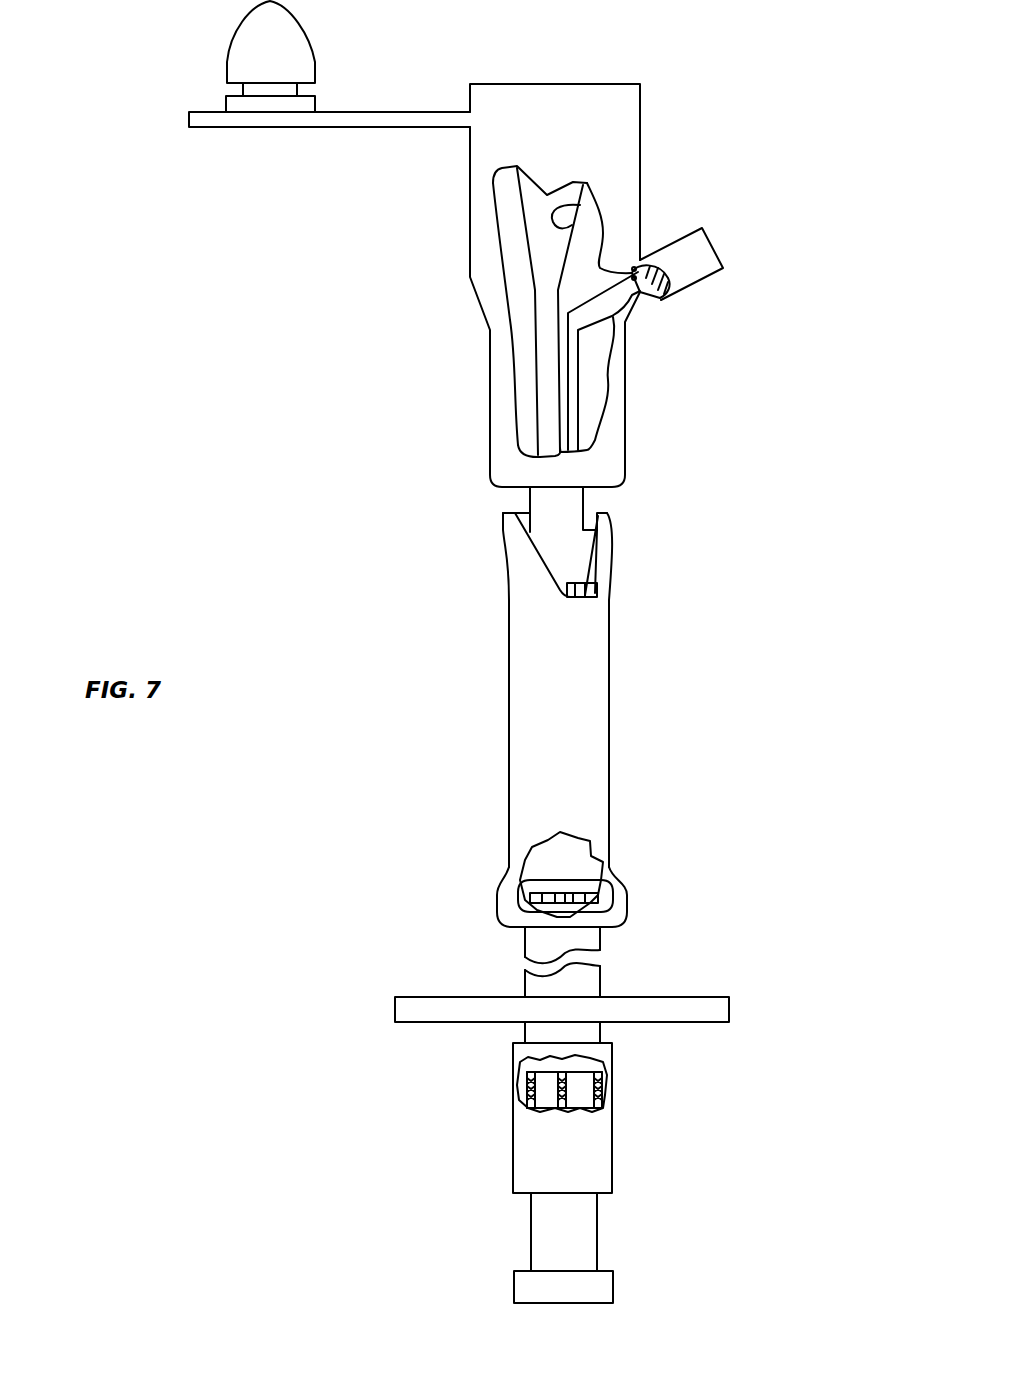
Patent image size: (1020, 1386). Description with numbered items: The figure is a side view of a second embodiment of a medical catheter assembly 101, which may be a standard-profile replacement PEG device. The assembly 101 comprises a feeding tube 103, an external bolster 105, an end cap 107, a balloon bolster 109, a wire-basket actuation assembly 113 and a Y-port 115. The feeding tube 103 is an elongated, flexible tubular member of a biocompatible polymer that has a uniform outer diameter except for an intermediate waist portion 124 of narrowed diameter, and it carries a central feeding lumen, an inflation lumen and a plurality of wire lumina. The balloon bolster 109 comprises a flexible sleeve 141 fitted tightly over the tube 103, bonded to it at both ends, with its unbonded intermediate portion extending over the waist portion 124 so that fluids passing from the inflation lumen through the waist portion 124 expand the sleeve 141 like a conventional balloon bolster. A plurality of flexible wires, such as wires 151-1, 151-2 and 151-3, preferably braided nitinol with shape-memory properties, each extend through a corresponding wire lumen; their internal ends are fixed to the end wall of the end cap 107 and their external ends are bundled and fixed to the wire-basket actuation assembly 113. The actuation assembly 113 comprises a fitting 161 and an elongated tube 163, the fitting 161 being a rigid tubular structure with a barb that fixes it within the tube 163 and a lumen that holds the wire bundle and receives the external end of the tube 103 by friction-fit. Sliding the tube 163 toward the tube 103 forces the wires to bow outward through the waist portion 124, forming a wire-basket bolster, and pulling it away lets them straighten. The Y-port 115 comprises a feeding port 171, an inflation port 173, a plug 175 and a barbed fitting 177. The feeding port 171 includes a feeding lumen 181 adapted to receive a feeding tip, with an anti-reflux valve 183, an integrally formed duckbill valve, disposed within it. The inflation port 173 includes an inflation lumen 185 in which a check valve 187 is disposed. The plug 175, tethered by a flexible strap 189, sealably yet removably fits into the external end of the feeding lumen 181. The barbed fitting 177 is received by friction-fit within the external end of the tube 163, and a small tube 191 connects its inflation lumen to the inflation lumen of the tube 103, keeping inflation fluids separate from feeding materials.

The assembly 101 is at (247, 323).
The feeding tube 103 is at (609, 1233).
The external bolster 105 is at (700, 992).
The end cap 107 is at (505, 1295).
The balloon bolster 109 is at (499, 1145).
The wire-basket actuation assembly 113 is at (620, 790).
The Y-port 115 is at (435, 367).
The intermediate waist portion 124 is at (545, 1100).
The flexible sleeve 141 is at (613, 1173).
The flexible wire 151-1 is at (527, 1080).
The flexible wire 151-2 is at (567, 1087).
The flexible wire 151-3 is at (607, 1103).
The fitting 161 is at (548, 865).
The elongated tube 163 is at (612, 672).
The feeding port 171 is at (583, 97).
The inflation port 173 is at (712, 253).
The plug 175 is at (245, 47).
The barbed fitting 177 is at (572, 552).
The feeding lumen 181 is at (547, 196).
The anti-reflux valve 183 is at (547, 196).
The inflation lumen 185 is at (588, 317).
The check valve 187 is at (670, 285).
The flexible strap 189 is at (385, 118).
The small tube 191 is at (580, 588).